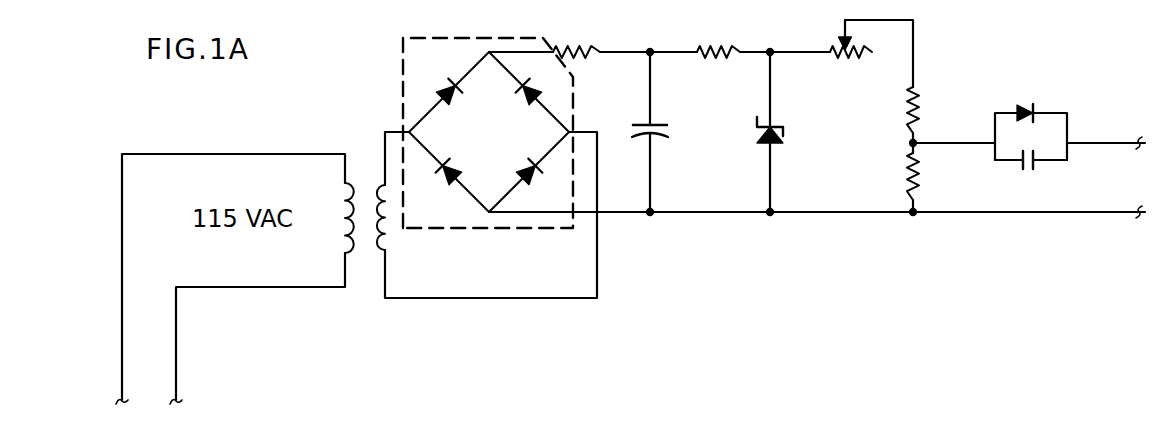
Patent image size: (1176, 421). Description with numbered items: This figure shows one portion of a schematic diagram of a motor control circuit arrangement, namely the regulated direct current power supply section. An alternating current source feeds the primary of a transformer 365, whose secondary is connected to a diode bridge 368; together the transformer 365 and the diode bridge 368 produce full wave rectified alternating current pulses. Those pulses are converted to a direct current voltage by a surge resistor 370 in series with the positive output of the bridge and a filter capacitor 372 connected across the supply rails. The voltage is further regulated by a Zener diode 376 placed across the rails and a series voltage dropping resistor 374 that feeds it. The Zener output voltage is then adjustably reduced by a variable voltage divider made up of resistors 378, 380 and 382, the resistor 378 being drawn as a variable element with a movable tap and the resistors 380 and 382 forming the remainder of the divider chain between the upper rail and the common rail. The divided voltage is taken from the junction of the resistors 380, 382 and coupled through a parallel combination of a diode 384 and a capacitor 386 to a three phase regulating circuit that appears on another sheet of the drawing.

The transformer 365 is at (367, 118).
The diode bridge 368 is at (502, 230).
The surge resistor 370 is at (587, 31).
The filter capacitor 372 is at (677, 133).
The series voltage dropping resistor 374 is at (725, 28).
The Zener diode 376 is at (793, 132).
The resistor 378 is at (837, 42).
The resistor 380 is at (923, 118).
The resistor 382 is at (919, 178).
The diode 384 is at (1038, 107).
The capacitor 386 is at (1048, 161).